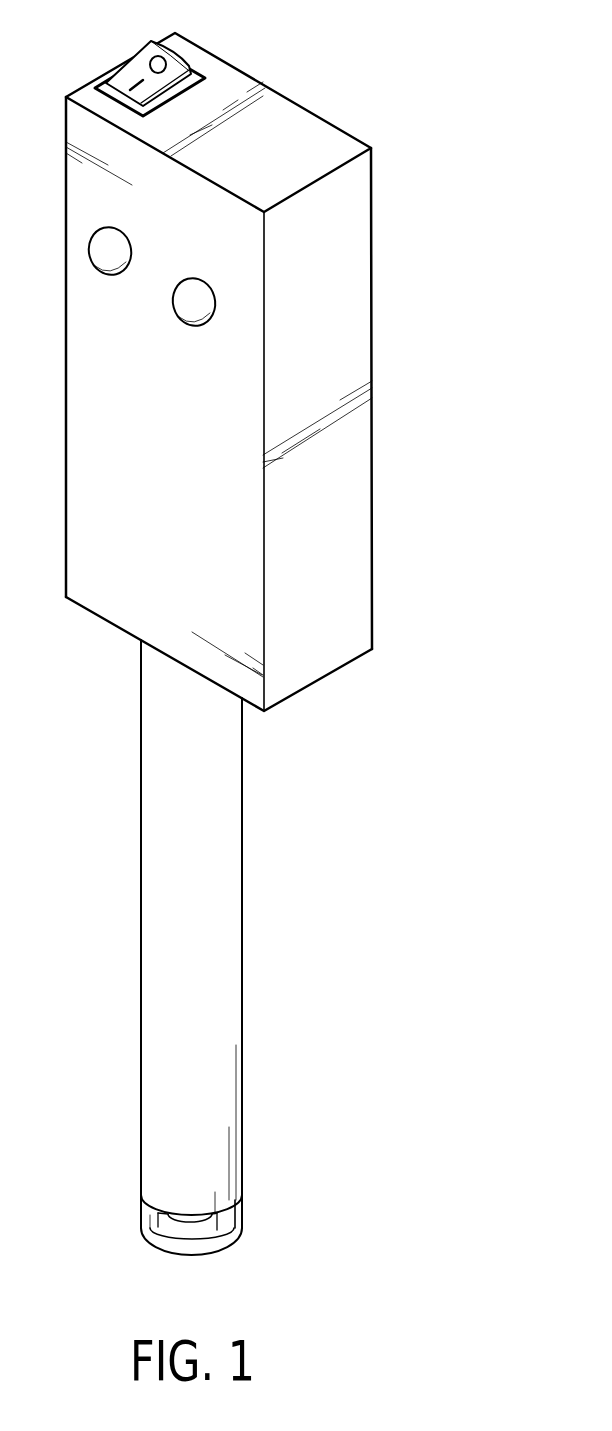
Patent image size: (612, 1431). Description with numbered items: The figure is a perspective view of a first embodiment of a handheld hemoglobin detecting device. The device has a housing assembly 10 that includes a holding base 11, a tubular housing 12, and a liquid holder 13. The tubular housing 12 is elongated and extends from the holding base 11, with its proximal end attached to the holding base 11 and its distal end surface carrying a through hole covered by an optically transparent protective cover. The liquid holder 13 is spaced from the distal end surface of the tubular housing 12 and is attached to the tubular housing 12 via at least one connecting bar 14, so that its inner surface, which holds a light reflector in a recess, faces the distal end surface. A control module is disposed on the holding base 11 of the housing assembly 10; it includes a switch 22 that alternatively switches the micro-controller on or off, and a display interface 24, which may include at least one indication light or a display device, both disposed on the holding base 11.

The housing assembly 10 is at (192, 631).
The holding base 11 is at (192, 359).
The tubular housing 12 is at (196, 947).
The liquid holder 13 is at (154, 1238).
The connecting bar 14 is at (196, 1225).
The switch 22 is at (137, 66).
The display interface 24 is at (96, 250).